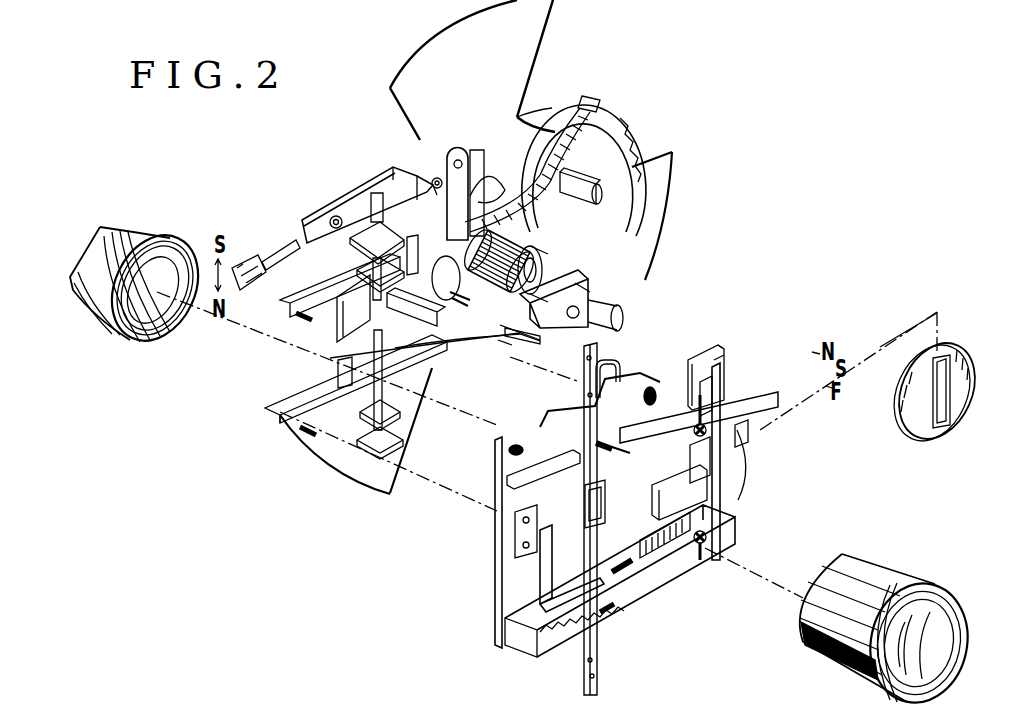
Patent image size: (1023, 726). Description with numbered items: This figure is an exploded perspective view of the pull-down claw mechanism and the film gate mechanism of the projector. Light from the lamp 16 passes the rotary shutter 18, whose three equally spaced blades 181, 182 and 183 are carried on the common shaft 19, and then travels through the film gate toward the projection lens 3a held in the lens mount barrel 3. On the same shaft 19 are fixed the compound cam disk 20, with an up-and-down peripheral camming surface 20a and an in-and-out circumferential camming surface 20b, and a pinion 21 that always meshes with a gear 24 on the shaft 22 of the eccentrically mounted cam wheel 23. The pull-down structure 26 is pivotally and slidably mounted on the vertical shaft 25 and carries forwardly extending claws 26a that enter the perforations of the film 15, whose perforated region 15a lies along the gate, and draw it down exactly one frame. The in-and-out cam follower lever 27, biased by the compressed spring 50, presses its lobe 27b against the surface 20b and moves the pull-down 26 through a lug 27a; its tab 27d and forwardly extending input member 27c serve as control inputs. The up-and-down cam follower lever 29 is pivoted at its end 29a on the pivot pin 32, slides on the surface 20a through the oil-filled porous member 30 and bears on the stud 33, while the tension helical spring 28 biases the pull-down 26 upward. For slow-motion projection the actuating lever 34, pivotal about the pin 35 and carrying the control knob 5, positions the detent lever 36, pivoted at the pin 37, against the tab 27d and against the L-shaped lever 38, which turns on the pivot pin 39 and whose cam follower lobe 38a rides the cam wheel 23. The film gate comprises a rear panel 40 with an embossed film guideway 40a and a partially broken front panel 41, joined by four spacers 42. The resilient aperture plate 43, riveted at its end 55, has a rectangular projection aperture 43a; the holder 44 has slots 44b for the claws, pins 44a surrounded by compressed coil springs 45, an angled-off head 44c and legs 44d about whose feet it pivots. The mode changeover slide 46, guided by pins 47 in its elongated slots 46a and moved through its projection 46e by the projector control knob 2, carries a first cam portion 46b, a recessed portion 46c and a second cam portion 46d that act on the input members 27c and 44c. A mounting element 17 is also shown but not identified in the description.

The projector control knob 2 is at (963, 382).
The lens mount barrel 3 is at (960, 607).
The projection lens 3a is at (944, 644).
The slow motion picture projection control knob 5 is at (243, 262).
The film 15 is at (609, 679).
The post hole 15a is at (583, 664).
The lamp 16 is at (131, 236).
The post shaft 17 is at (362, 226).
The rotary shutter 18 is at (485, 89).
The shutter blade 181 is at (533, 34).
The shutter blade 182 is at (657, 206).
The shutter blade 183 is at (337, 480).
The common shaft 19 is at (568, 283).
The compound cam disk 20 is at (518, 324).
The up-and-down peripheral camming surface 20a is at (500, 350).
The in-and-out circumferential camming surface 20b is at (510, 336).
The pinion 21 is at (497, 243).
The shaft 22 is at (591, 183).
The cam wheel 23 is at (562, 138).
The gear 24 is at (627, 134).
The vertical shaft 25 is at (384, 395).
The pull-down structure 26 is at (335, 289).
The claws 26a is at (300, 313).
The in-and-out cam follower lever 27 is at (410, 213).
The lug 27a is at (340, 336).
The lobe 27b is at (495, 185).
The input member 27c is at (422, 322).
The tab 27d is at (406, 260).
The tension helical spring 28 is at (333, 367).
The up-and-down cam follower lever 29 is at (434, 360).
The lever end 29a is at (590, 288).
The lubricating oil-filled porous member 30 is at (505, 354).
The pivot pin 32 is at (628, 298).
The stud 33 is at (372, 416).
The actuating lever 34 is at (370, 194).
The pin 35 is at (331, 218).
The detent lever 36 is at (436, 270).
The pin 37 is at (436, 176).
The L-shaped lever 38 is at (478, 172).
The cam follower lobe 38a is at (535, 216).
The pivot pin 39 is at (459, 159).
The rear panel 40 is at (500, 513).
The film guideway 40a is at (605, 372).
The front panel 41 is at (667, 578).
The spacers 42 is at (651, 390).
The aperture plate 43 is at (552, 538).
The rectangular projection aperture 43a is at (585, 506).
The movable film gate holder 44 is at (637, 562).
The pins 44a is at (608, 533).
The vertically elongated slots 44b is at (595, 449).
The angled-off head 44c is at (703, 488).
The legs 44d is at (505, 484).
The compressed coil springs 45 is at (565, 410).
The operating mode changeover control slide 46 is at (703, 454).
The longitudinally elongated slots 46a is at (715, 396).
The first cam portion 46b is at (721, 364).
The recessed portion 46c is at (712, 444).
The second cam portion 46d is at (707, 469).
The projection 46e is at (778, 406).
The pins 47 is at (738, 410).
The compressed spring 50 is at (472, 318).
The riveted end 55 is at (512, 541).